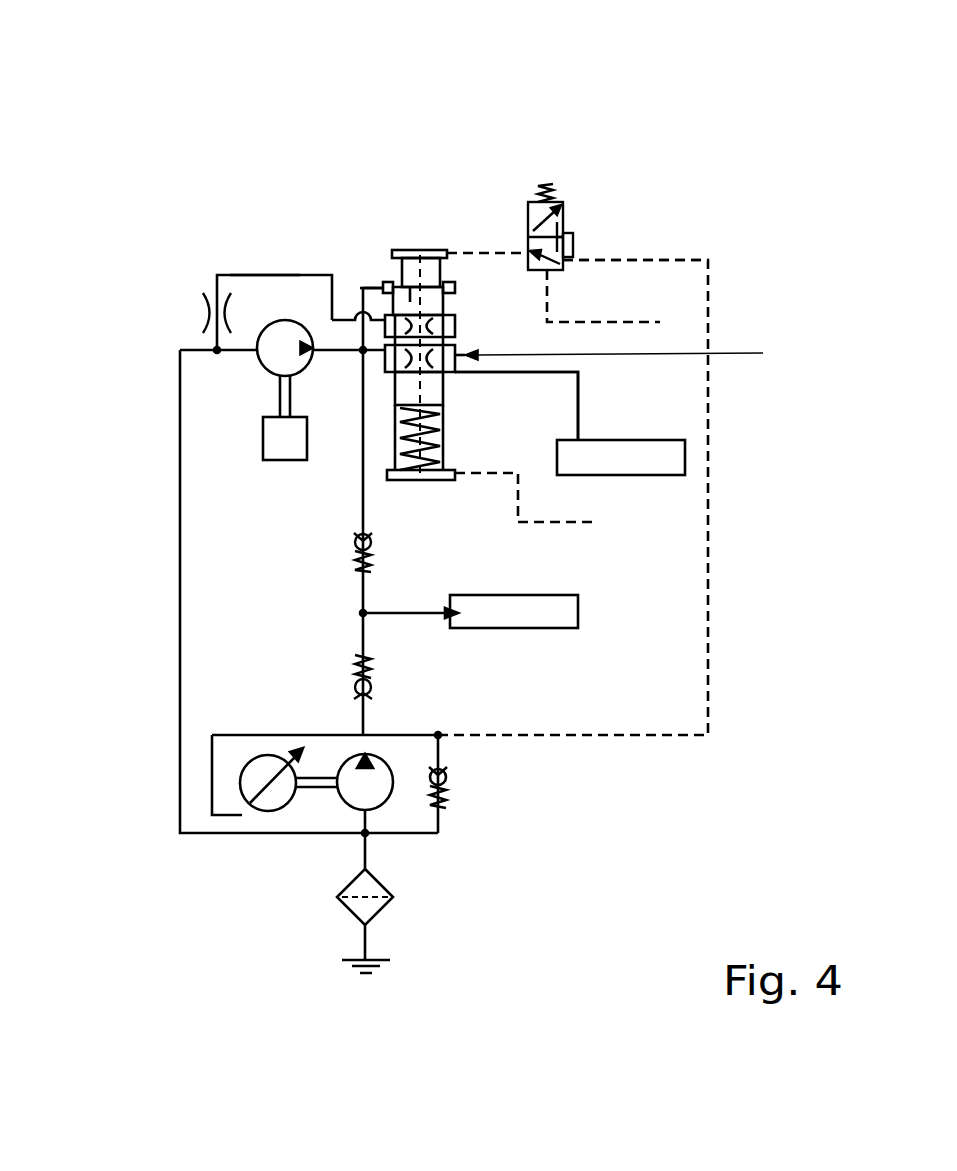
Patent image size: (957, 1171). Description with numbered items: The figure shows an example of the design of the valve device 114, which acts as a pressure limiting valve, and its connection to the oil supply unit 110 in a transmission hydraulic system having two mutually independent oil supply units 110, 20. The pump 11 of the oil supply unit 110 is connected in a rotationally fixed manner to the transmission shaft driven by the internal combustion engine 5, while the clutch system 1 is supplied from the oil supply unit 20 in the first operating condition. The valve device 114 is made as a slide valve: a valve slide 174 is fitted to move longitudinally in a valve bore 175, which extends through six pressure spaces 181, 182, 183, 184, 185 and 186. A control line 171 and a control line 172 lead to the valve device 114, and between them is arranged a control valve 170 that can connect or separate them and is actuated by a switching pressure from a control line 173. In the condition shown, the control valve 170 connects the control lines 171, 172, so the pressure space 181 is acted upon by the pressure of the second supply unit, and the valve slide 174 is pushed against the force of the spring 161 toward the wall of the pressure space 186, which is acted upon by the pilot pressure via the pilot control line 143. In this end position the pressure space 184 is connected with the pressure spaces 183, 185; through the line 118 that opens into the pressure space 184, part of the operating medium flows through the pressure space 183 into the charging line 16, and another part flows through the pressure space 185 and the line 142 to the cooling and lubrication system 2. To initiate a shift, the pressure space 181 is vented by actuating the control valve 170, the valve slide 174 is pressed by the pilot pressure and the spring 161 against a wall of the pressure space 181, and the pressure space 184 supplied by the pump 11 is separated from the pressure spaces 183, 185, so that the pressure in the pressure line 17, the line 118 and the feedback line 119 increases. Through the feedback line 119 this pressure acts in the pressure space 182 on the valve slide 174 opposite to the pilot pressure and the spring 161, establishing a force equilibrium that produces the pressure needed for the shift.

The clutch system 1 is at (600, 600).
The cooling and lubrication system 2 is at (668, 458).
The internal combustion engine 5 is at (273, 440).
The pump 11 is at (267, 352).
The charging line 16 is at (257, 275).
The pressure line 17 is at (341, 292).
The oil supply unit 20 is at (172, 888).
The oil supply unit 110 is at (192, 268).
The valve device 114 is at (641, 353).
The line 118 is at (383, 285).
The feedback line 119 is at (397, 252).
The line 142 is at (580, 408).
The pilot control line 143 is at (563, 520).
The spring 161 is at (395, 440).
The control valve 170 is at (580, 192).
The control line 171 is at (657, 260).
The control line 172 is at (455, 340).
The control line 173 is at (610, 322).
The valve slide 174 is at (403, 250).
The valve bore 175 is at (395, 392).
The pressure space 181 is at (432, 250).
The pressure space 182 is at (447, 285).
The pressure space 183 is at (455, 320).
The pressure space 184 is at (455, 355).
The pressure space 185 is at (360, 288).
The pressure space 186 is at (412, 480).